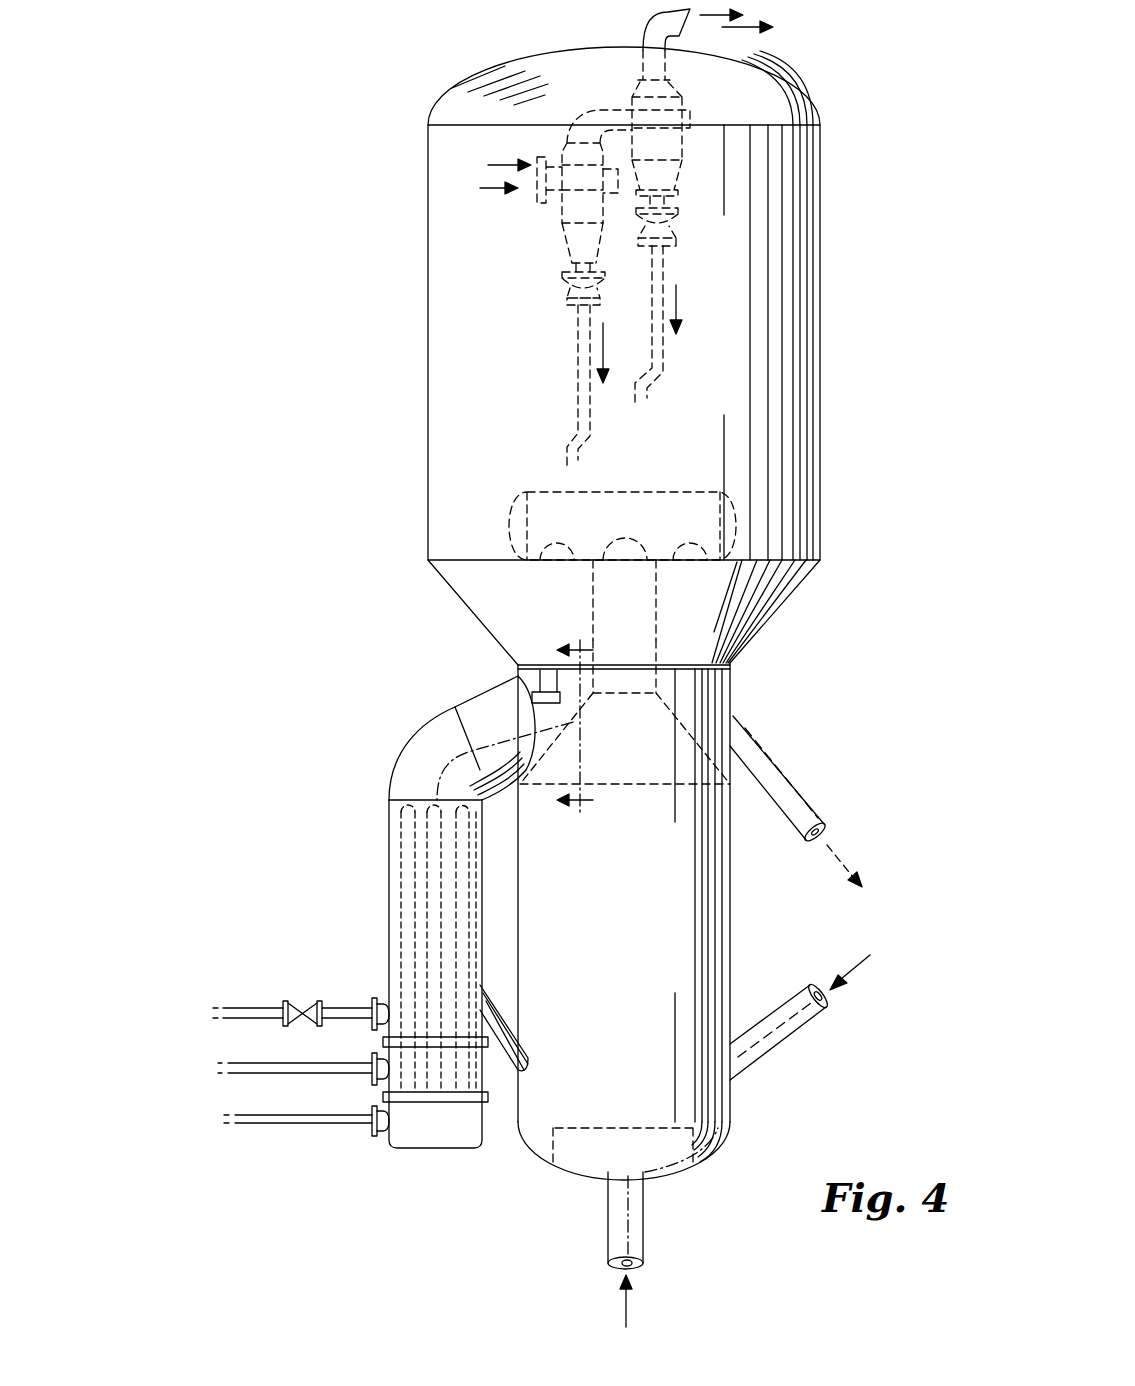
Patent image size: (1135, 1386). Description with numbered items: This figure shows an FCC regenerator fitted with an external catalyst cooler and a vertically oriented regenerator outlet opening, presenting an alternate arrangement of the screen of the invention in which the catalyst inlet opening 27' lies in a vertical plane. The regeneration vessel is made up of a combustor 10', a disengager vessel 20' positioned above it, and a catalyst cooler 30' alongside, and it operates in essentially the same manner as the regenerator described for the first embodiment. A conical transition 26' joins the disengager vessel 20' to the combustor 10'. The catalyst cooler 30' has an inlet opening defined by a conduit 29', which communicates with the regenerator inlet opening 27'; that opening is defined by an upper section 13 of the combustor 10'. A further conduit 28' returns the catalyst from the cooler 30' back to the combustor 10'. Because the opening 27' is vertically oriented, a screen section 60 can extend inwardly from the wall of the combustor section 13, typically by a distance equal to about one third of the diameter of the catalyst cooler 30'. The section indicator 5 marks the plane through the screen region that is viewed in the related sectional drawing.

The disengager vessel 20' is at (657, 324).
The conical transition section 26' is at (624, 612).
The combustor 10' is at (694, 963).
The upper section of combustor 13 is at (732, 693).
The catalyst inlet opening 27' is at (625, 712).
The screen section 60 is at (540, 672).
The section line 5- 5 is at (586, 726).
The conduit 29' is at (481, 729).
The catalyst cooler 30' is at (350, 974).
The conduit 28' is at (526, 1016).